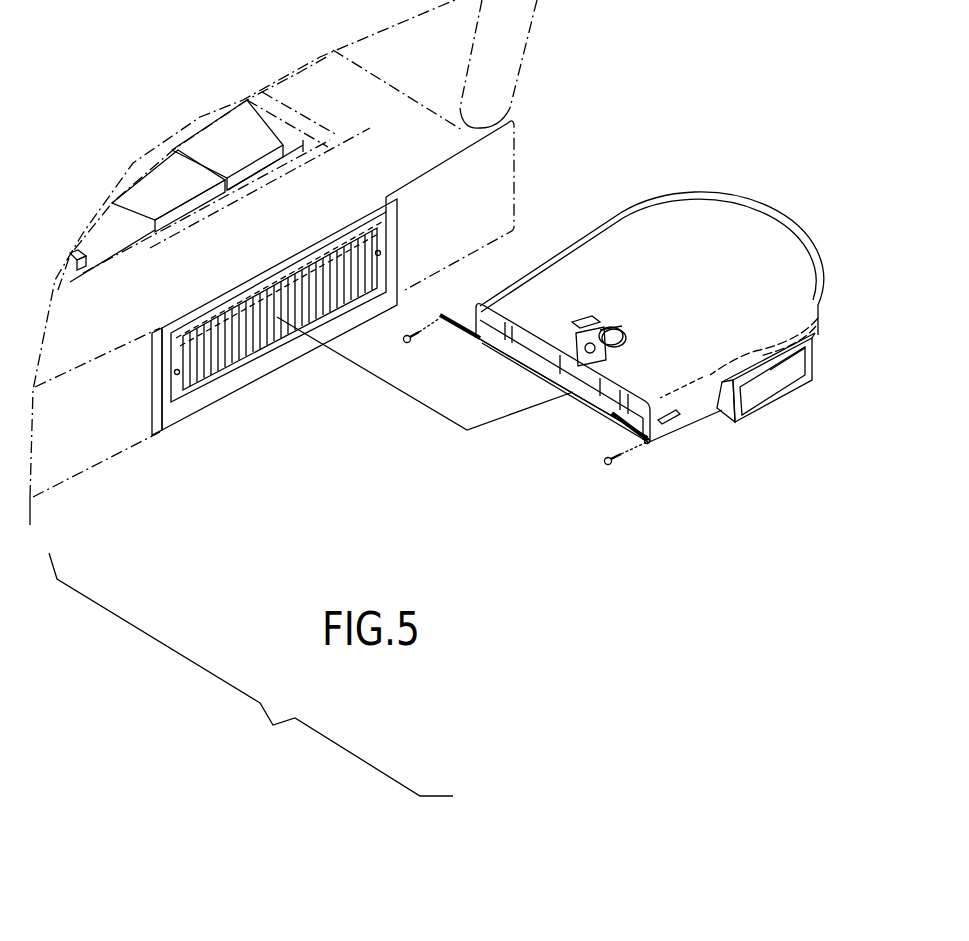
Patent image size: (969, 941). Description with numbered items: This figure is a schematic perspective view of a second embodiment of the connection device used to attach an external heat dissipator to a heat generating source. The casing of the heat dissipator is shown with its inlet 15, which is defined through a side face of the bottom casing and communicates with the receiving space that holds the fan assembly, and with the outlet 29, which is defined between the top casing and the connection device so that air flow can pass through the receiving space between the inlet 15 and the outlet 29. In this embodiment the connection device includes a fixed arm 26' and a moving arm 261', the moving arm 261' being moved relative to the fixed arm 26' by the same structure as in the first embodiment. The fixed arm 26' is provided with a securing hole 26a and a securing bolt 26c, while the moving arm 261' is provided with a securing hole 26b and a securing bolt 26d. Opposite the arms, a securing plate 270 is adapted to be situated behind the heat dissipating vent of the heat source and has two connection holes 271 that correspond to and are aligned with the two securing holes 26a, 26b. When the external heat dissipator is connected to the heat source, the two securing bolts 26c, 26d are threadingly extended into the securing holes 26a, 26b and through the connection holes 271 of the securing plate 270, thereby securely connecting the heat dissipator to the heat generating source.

The inlet 15 is at (770, 388).
The fixed arm 26' is at (537, 373).
The securing hole 26a is at (440, 320).
The securing hole 26b is at (647, 442).
The securing bolt 26c is at (413, 330).
The securing bolt 26d is at (617, 463).
The outlet 29 is at (570, 388).
The moving arm 261' is at (584, 448).
The securing plate 270 is at (204, 380).
The connection holes 271 is at (158, 378).